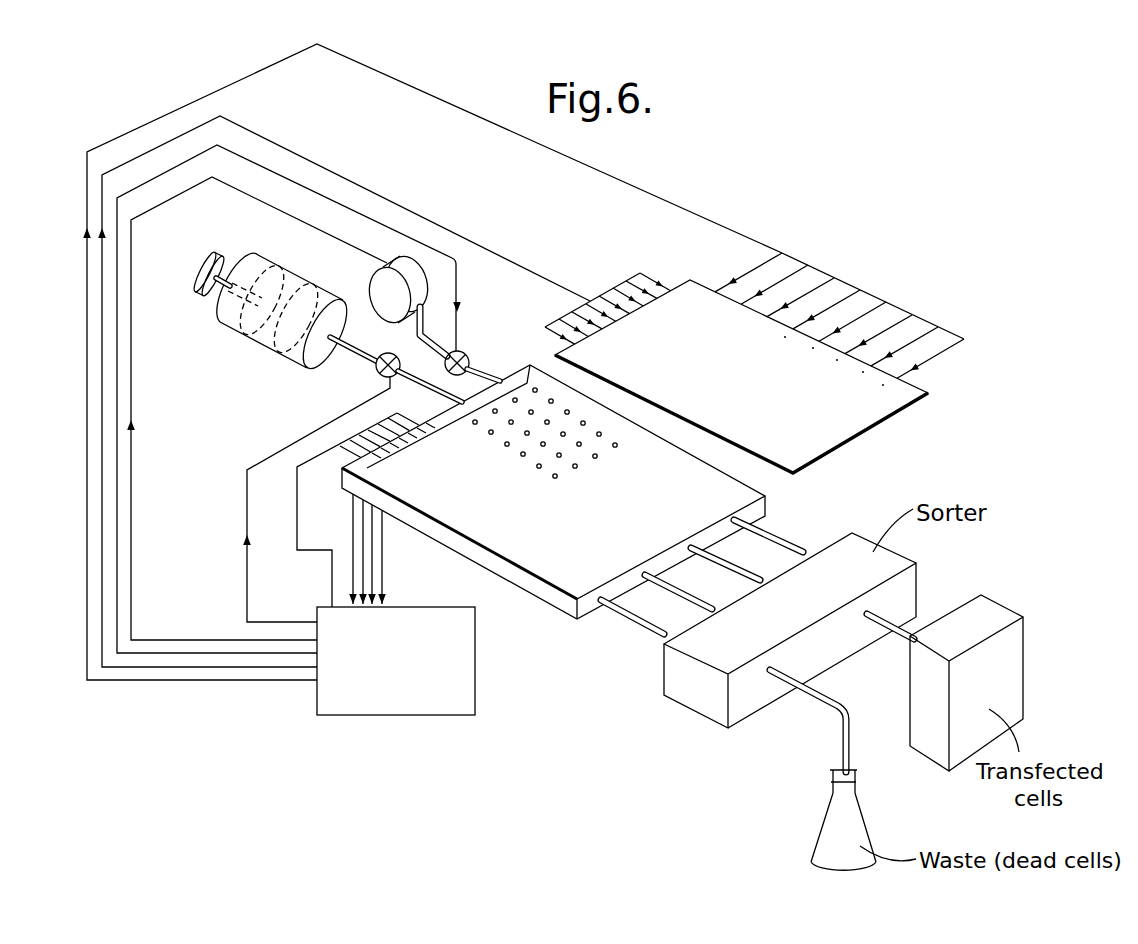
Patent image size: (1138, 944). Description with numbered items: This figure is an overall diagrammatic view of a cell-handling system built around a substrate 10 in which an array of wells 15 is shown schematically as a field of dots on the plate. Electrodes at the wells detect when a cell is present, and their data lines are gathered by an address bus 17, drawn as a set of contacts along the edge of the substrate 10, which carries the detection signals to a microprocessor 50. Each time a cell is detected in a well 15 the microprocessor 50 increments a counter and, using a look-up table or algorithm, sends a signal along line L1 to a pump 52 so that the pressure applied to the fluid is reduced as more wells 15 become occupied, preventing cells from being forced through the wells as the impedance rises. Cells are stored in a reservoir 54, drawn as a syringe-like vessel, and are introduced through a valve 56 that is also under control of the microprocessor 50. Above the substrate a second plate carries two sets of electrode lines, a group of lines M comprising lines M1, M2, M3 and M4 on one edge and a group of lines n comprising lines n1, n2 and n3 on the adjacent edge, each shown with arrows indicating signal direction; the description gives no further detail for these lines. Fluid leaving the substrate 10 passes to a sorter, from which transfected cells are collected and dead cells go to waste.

The substrate 10 is at (550, 603).
The wells 15 is at (486, 431).
The address bus 17 is at (397, 453).
The microprocessor 50 is at (403, 716).
The pump 52 is at (400, 268).
The reservoir 54 is at (278, 353).
The valve 56 is at (377, 373).
The line L1 is at (257, 408).
The row electrode lines M is at (581, 233).
The row electrode line 1 M1 is at (657, 283).
The row electrode line 2 M2 is at (643, 280).
The row electrode line 3 M3 is at (638, 277).
The row electrode line 4 M4 is at (590, 303).
The column electrode lines n is at (846, 315).
The column electrode line 1 n1 is at (737, 275).
The column electrode line 2 n2 is at (760, 288).
The column electrode line 3 n3 is at (788, 300).